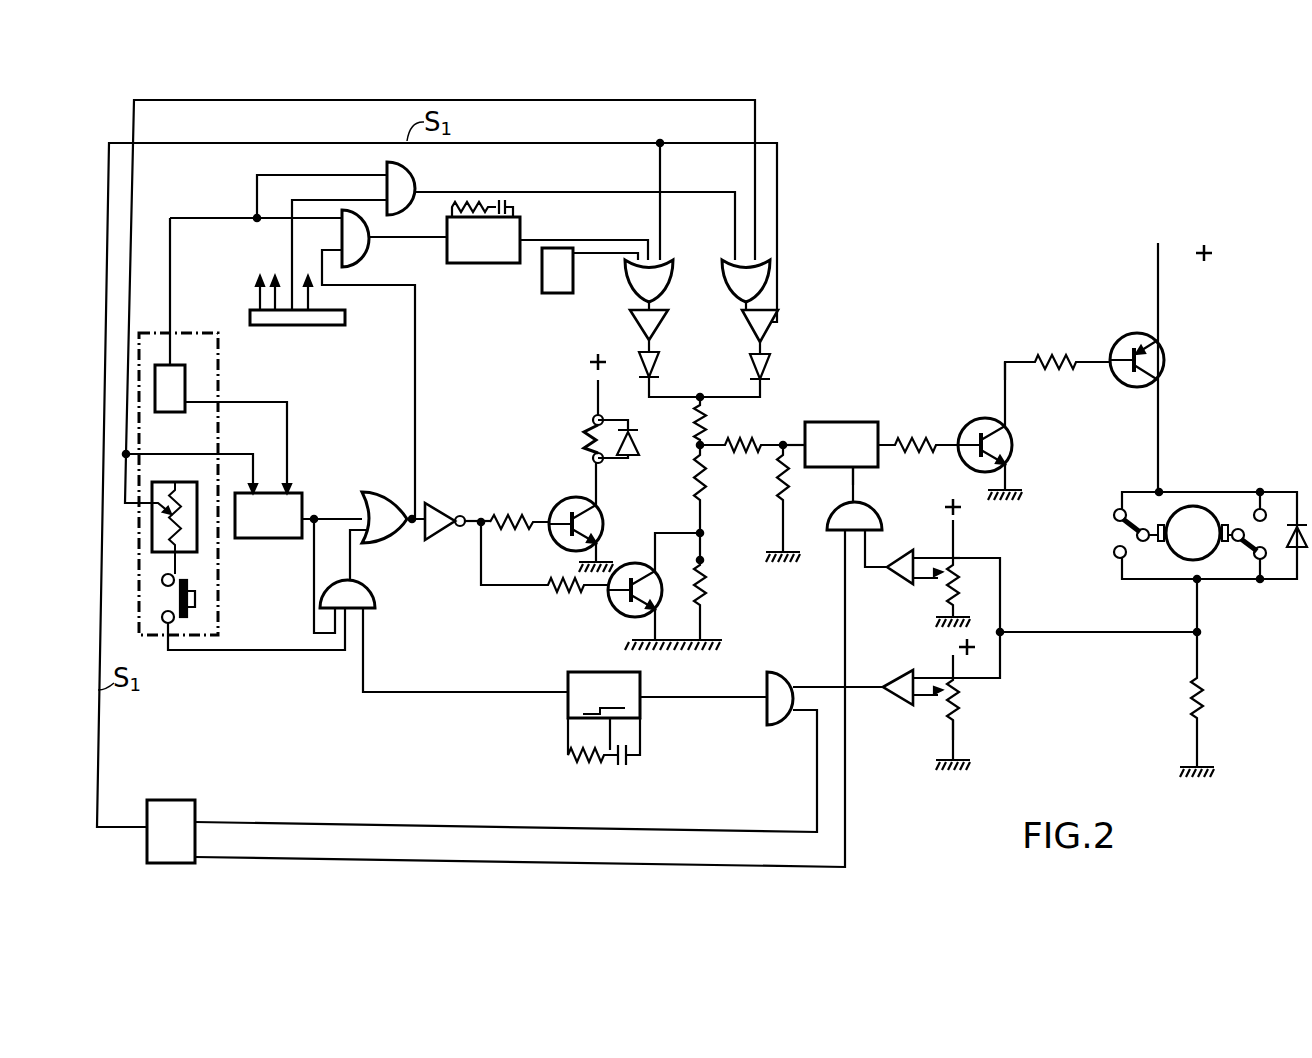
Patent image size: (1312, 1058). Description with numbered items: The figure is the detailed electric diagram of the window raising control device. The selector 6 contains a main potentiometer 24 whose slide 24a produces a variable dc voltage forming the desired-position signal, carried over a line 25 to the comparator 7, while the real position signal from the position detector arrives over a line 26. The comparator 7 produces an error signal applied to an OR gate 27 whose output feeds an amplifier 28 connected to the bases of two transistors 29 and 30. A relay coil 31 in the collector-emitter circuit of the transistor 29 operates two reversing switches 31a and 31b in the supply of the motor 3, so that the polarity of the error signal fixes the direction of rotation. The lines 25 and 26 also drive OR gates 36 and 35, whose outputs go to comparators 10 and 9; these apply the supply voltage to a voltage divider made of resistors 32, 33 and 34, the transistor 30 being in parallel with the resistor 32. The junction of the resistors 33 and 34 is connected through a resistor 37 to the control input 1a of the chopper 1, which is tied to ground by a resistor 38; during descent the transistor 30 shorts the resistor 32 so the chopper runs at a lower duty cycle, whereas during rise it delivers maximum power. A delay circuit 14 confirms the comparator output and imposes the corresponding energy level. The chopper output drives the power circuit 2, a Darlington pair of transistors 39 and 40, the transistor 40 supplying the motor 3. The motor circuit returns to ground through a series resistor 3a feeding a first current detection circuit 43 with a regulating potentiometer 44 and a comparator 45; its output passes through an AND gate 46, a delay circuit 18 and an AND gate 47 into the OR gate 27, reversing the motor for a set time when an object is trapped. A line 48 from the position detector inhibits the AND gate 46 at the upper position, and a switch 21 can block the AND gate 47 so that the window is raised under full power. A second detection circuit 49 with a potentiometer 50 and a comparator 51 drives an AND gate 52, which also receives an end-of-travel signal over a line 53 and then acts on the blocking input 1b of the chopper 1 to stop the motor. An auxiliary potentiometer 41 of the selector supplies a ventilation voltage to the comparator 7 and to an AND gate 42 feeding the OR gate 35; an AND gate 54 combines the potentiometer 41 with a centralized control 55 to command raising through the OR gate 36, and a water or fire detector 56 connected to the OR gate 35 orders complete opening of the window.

The chopper 1 is at (843, 432).
The control input of the chopper 1a is at (802, 446).
The blocking input of the chopper 1b is at (858, 468).
The power circuit 2 is at (1004, 357).
The motor 3 is at (1199, 498).
The series resistor 3a is at (1201, 700).
The selector 6 is at (218, 372).
The comparator 7 is at (290, 507).
The comparator 9 is at (630, 326).
The comparator 10 is at (770, 323).
The delay circuit 14 is at (470, 262).
The delay circuit 18 is at (640, 688).
The switch 21 is at (195, 612).
The main potentiometer 24 is at (200, 478).
The slide 24a is at (167, 510).
The line 25 is at (566, 103).
The line 26 is at (490, 143).
The OR gate 27 is at (390, 492).
The amplifier 28 is at (446, 500).
The transistor 29 is at (552, 497).
The transistor 30 is at (608, 600).
The relay coil 31 is at (575, 438).
The reversing switch 31a is at (1128, 522).
The reversing switch 31b is at (1250, 548).
The resistor 32 is at (706, 580).
The resistor 33 is at (690, 490).
The resistor 34 is at (690, 421).
The OR gate 35 is at (630, 281).
The OR gate 36 is at (727, 281).
The resistor 37 is at (737, 441).
The resistor 38 is at (776, 486).
The transistor 39 is at (1010, 456).
The transistor 40 is at (1165, 368).
The auxiliary potentiometer 41 is at (175, 385).
The AND gate 42 is at (368, 245).
The first motor current detection circuit 43 is at (962, 683).
The regulating potentiometer 44 is at (942, 715).
The comparator 45 is at (893, 672).
The AND gate 46 is at (781, 688).
The AND gate 47 is at (375, 590).
The line 48 is at (478, 828).
The second intensity detection circuit 49 is at (960, 557).
The regulating potentiometer 50 is at (958, 582).
The comparator 51 is at (900, 580).
The AND gate 52 is at (880, 518).
The line 53 is at (532, 862).
The AND gate 54 is at (413, 186).
The centralized control 55 is at (340, 320).
The water or fire detector 56 is at (556, 283).